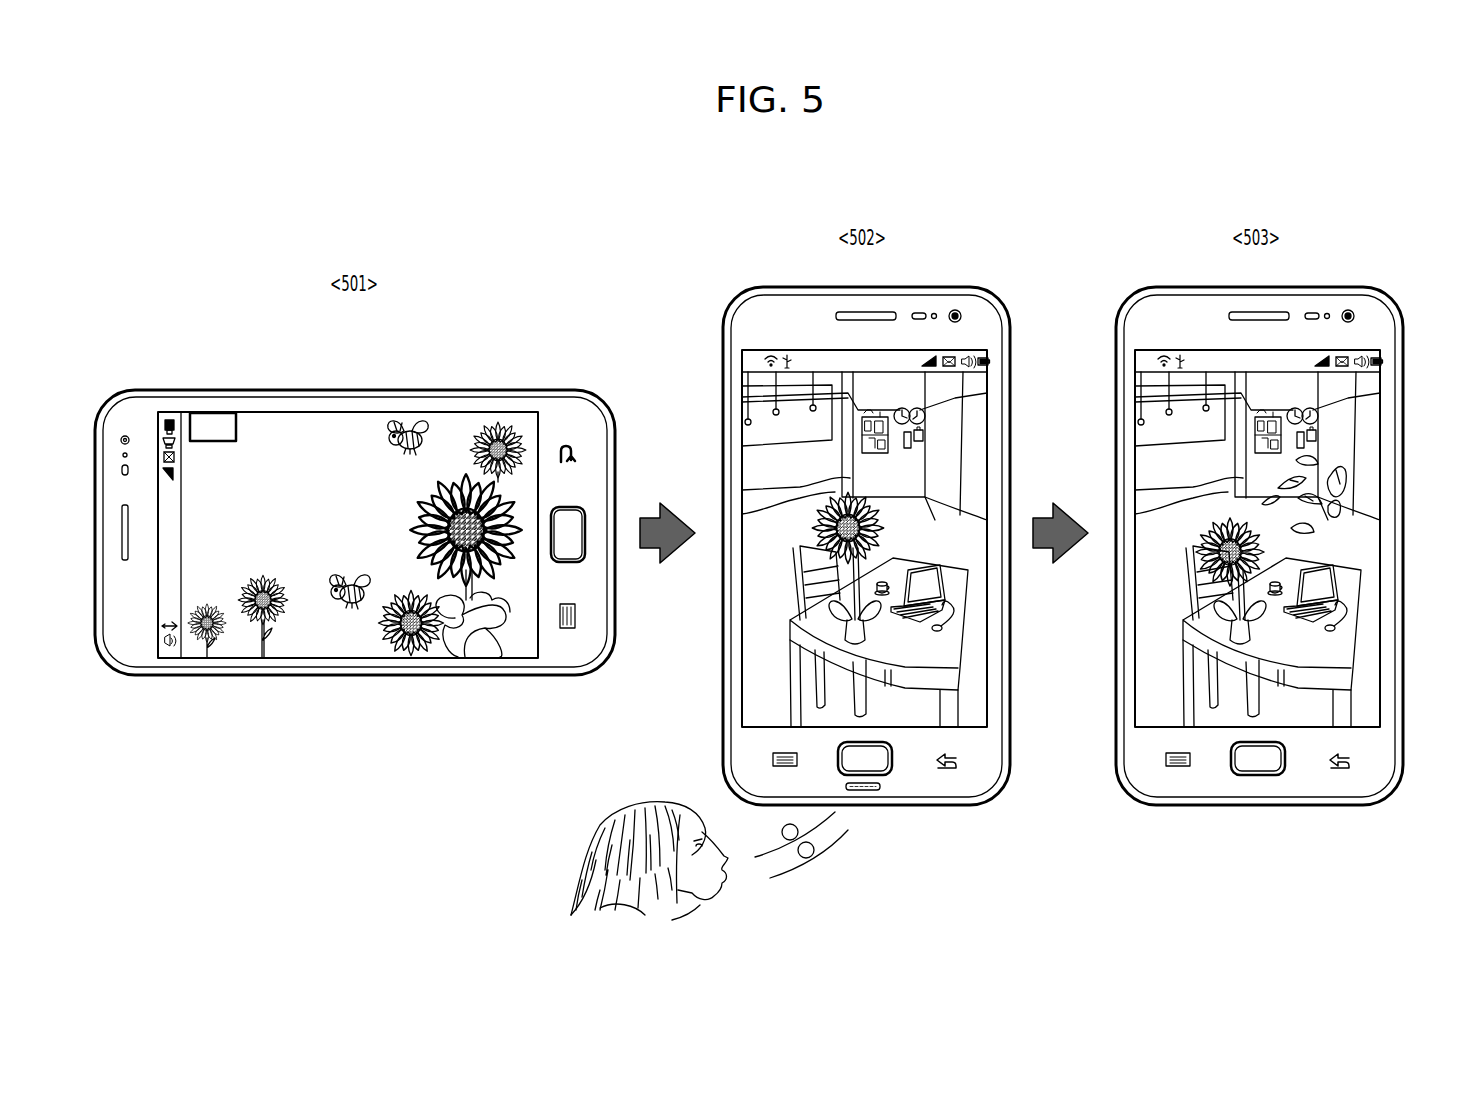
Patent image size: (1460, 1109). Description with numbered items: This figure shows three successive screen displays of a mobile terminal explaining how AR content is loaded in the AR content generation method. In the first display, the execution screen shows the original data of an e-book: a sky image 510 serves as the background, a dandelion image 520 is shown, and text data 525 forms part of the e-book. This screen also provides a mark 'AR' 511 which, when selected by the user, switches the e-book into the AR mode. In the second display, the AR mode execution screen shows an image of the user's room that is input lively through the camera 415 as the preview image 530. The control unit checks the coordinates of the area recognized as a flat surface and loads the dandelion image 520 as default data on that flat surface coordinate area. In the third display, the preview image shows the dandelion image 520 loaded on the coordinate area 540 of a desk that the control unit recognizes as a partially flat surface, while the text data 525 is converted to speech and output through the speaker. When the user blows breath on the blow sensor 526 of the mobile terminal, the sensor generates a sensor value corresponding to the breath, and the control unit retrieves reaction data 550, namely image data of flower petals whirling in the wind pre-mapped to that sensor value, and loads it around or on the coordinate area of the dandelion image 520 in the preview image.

The sky image 510 is at (462, 418).
The mark 'AR' 511 is at (199, 416).
The text data 525 is at (283, 450).
The dandelion image 520 is at (243, 627).
The camera 415 is at (952, 310).
The preview image 530 is at (945, 457).
The coordinate area of a desk 540 is at (955, 637).
The blow sensor 526 is at (872, 792).
The reaction data 550 is at (1340, 470).